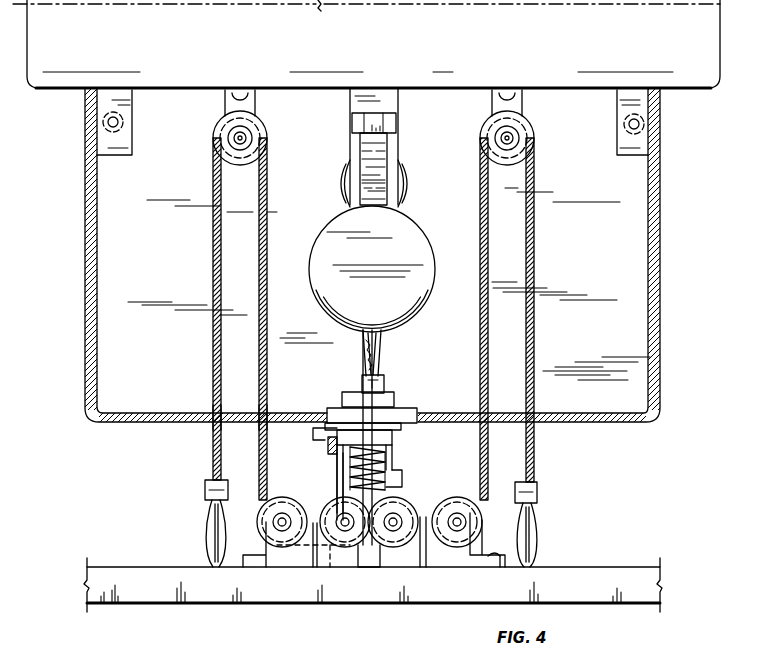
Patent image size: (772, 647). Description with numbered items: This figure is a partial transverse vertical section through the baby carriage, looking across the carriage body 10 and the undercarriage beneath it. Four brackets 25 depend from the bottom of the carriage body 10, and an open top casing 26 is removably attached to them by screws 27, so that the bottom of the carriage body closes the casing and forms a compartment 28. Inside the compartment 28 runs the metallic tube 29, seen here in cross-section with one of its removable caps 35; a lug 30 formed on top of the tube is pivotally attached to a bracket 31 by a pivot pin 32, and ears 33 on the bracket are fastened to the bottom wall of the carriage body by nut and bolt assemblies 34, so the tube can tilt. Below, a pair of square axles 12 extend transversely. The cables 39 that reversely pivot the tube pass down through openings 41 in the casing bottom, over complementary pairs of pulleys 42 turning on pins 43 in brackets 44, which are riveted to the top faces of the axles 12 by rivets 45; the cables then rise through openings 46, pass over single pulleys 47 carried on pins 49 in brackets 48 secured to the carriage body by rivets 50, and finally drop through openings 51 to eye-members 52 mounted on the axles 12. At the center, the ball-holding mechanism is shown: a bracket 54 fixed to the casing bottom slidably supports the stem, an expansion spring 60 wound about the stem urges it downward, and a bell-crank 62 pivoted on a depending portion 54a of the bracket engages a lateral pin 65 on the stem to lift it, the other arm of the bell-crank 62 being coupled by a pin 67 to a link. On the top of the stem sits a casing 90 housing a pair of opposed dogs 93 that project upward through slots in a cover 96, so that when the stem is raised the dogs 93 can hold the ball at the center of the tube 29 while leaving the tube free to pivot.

The carriage body 10 is at (717, 81).
The square axles 12 is at (603, 580).
The brackets 25 is at (126, 142).
The open top casing 26 is at (90, 283).
The screws 27 is at (108, 122).
The compartment 28 is at (107, 213).
The metallic tube 29 is at (418, 328).
The lug 30 is at (368, 178).
The bracket 31 is at (390, 142).
The pivot pin 32 is at (407, 187).
The ears 33 is at (378, 97).
The nut and bolt assemblies 34 is at (355, 119).
The removable caps 35 is at (410, 240).
The cable 39 is at (263, 290).
The openings 41 is at (398, 418).
The pulleys 42 is at (330, 503).
The pins 43 is at (282, 512).
The brackets 44 is at (293, 560).
The rivets 45 is at (253, 553).
The openings 46 is at (268, 413).
The pulleys 47 is at (263, 128).
The brackets 48 is at (226, 107).
The pins 49 is at (234, 139).
The rivets 50 is at (263, 94).
The openings 51 is at (205, 413).
The eye-members 52 is at (200, 557).
The bracket 54 is at (392, 436).
The depending portion of bracket 54a is at (384, 454).
The expansion spring 60 is at (320, 428).
The bell-crank 62 is at (337, 462).
The pin 65 is at (330, 567).
The pin 67 is at (327, 444).
The casing 90 is at (388, 395).
The dogs 93 is at (358, 377).
The cover 96 is at (360, 383).